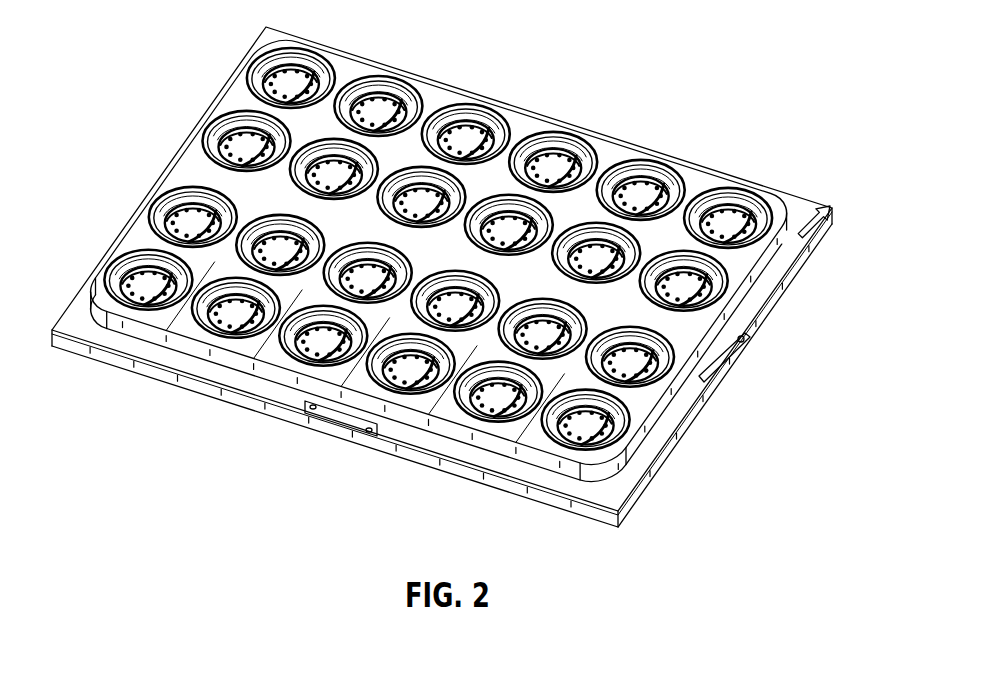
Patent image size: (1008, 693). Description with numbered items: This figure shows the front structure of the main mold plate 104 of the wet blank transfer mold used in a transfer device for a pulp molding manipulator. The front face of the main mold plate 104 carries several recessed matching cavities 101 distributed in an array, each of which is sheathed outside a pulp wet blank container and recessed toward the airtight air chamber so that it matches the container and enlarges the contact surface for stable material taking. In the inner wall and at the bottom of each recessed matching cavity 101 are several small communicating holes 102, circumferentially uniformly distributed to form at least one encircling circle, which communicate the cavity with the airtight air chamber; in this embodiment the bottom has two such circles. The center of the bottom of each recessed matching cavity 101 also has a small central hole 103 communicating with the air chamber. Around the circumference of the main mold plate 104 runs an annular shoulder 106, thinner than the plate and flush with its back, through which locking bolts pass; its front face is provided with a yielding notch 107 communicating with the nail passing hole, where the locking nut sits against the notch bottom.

The recessed matching cavity 101 is at (750, 207).
The small communicating hole 102 is at (638, 162).
The small central hole 103 is at (717, 293).
The main mold plate 104 is at (257, 343).
The annular shoulder 106 is at (440, 447).
The yielding notch 107 is at (332, 423).